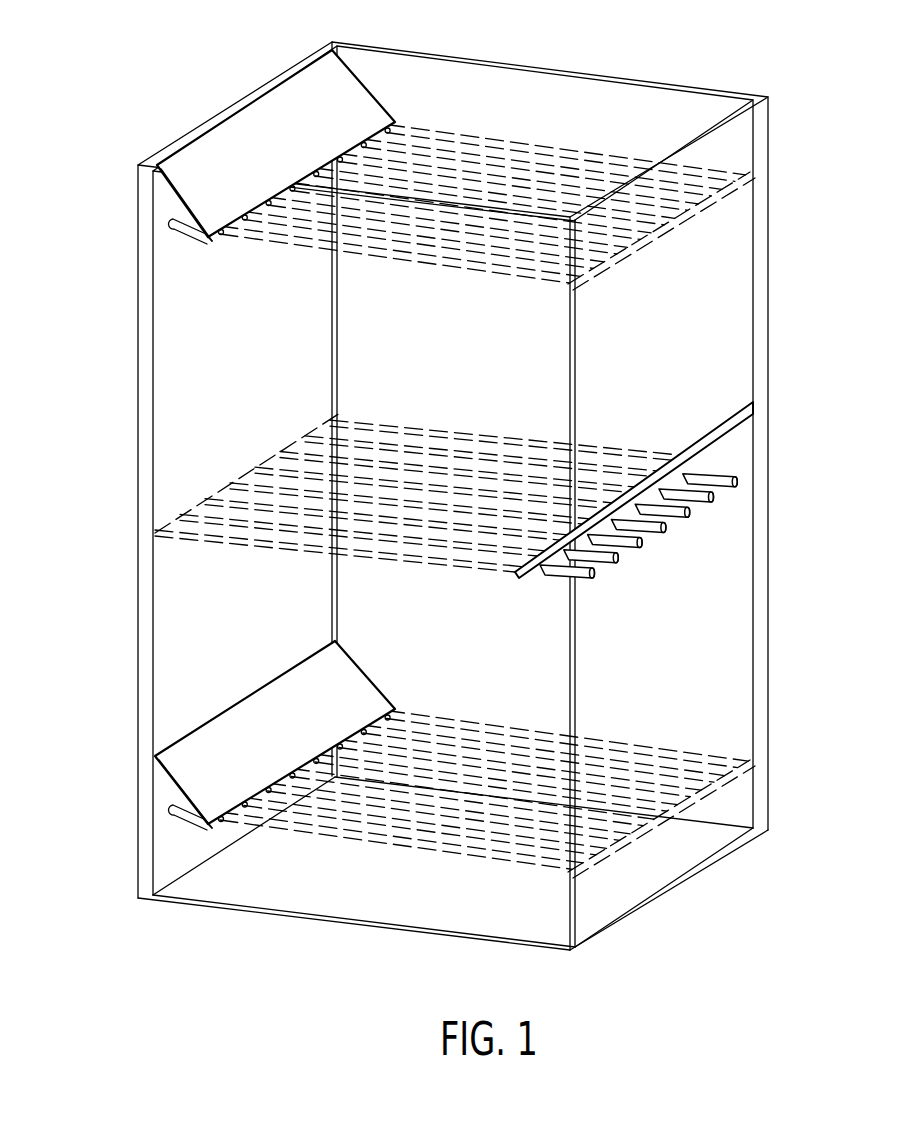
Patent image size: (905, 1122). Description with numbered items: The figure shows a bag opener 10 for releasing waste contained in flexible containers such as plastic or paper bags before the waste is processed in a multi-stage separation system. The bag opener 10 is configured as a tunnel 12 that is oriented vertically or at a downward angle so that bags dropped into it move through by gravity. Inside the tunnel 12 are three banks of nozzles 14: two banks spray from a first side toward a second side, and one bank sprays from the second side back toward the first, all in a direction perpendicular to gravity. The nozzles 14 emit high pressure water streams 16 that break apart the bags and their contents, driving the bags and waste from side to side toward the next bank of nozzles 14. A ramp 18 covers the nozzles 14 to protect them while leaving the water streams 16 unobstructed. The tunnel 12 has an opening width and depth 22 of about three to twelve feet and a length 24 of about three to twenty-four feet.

The bag opener 10 is at (80, 168).
The tunnel 12 is at (764, 96).
The nozzles 14 is at (722, 472).
The water streams 16 is at (627, 803).
The ramp 18 is at (136, 714).
The opening width and depth 22 is at (221, 90).
The length 24 is at (136, 432).